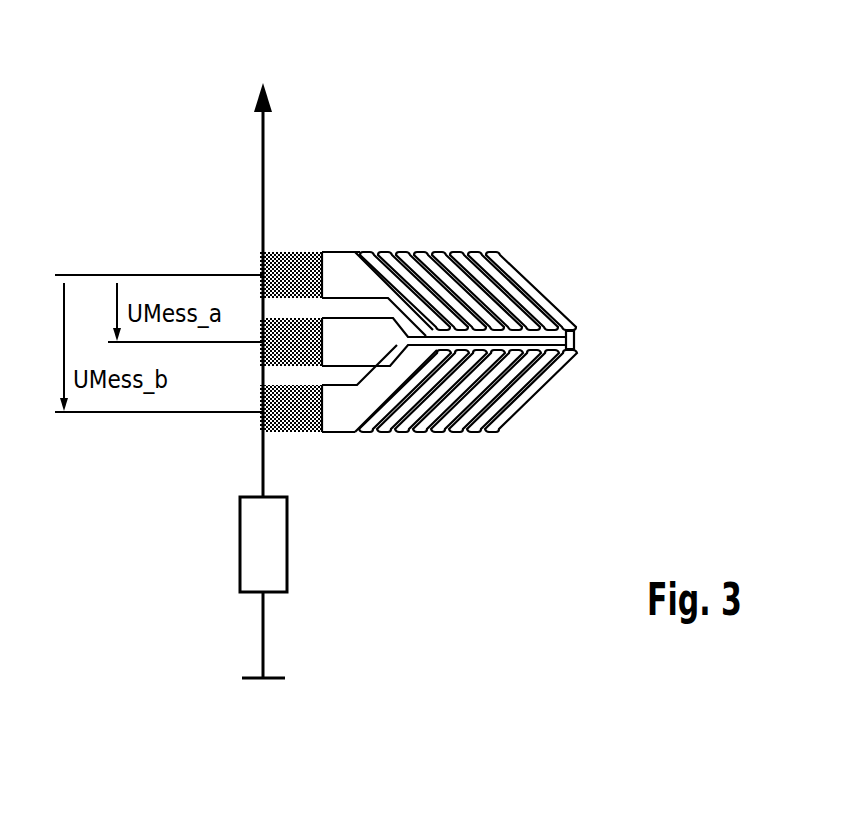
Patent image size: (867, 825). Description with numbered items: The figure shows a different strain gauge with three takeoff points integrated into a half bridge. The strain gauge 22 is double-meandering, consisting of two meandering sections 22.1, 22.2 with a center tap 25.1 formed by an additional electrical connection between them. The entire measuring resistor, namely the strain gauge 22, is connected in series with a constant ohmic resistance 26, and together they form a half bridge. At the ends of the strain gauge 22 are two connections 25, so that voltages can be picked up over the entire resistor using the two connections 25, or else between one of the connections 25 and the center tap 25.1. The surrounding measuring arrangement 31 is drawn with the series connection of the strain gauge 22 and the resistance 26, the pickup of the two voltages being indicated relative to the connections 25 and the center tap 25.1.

The strain gauge 22 is at (507, 227).
The meandering section 22.1 is at (540, 288).
The meandering section 22.2 is at (550, 380).
The connections 25 is at (300, 262).
The center tap 25.1 is at (270, 358).
The constant ohmic resistance 26 is at (272, 542).
The measuring circuit 31 is at (210, 517).